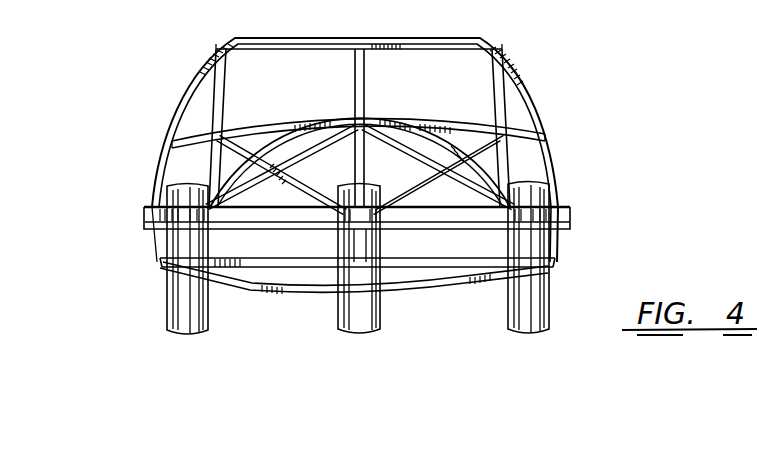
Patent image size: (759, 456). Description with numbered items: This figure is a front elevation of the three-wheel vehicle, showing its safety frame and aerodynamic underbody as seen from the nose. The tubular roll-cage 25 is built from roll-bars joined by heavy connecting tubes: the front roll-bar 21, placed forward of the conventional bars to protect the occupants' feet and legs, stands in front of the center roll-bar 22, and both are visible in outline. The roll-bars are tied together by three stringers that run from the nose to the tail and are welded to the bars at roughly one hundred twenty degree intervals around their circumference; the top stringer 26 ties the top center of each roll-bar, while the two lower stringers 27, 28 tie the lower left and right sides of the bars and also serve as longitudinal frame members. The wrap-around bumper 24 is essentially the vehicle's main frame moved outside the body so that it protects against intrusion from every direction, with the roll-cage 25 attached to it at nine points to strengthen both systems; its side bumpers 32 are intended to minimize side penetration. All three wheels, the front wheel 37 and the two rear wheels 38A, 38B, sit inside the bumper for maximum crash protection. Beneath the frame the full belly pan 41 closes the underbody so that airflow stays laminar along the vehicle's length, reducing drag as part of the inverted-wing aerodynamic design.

The front roll-bar 21 is at (217, 188).
The center roll-bar 22 is at (284, 37).
The wrap-around bumper 24 is at (145, 223).
The roll-cage 25 is at (168, 113).
The top stringer 26 is at (357, 98).
The stringer 27 is at (160, 262).
The stringer 28 is at (549, 262).
The side bumpers 32 is at (150, 212).
The front wheel 37 is at (380, 305).
The rear wheel 38A is at (545, 288).
The rear wheel 38B is at (167, 304).
The full belly pan 41 is at (440, 288).